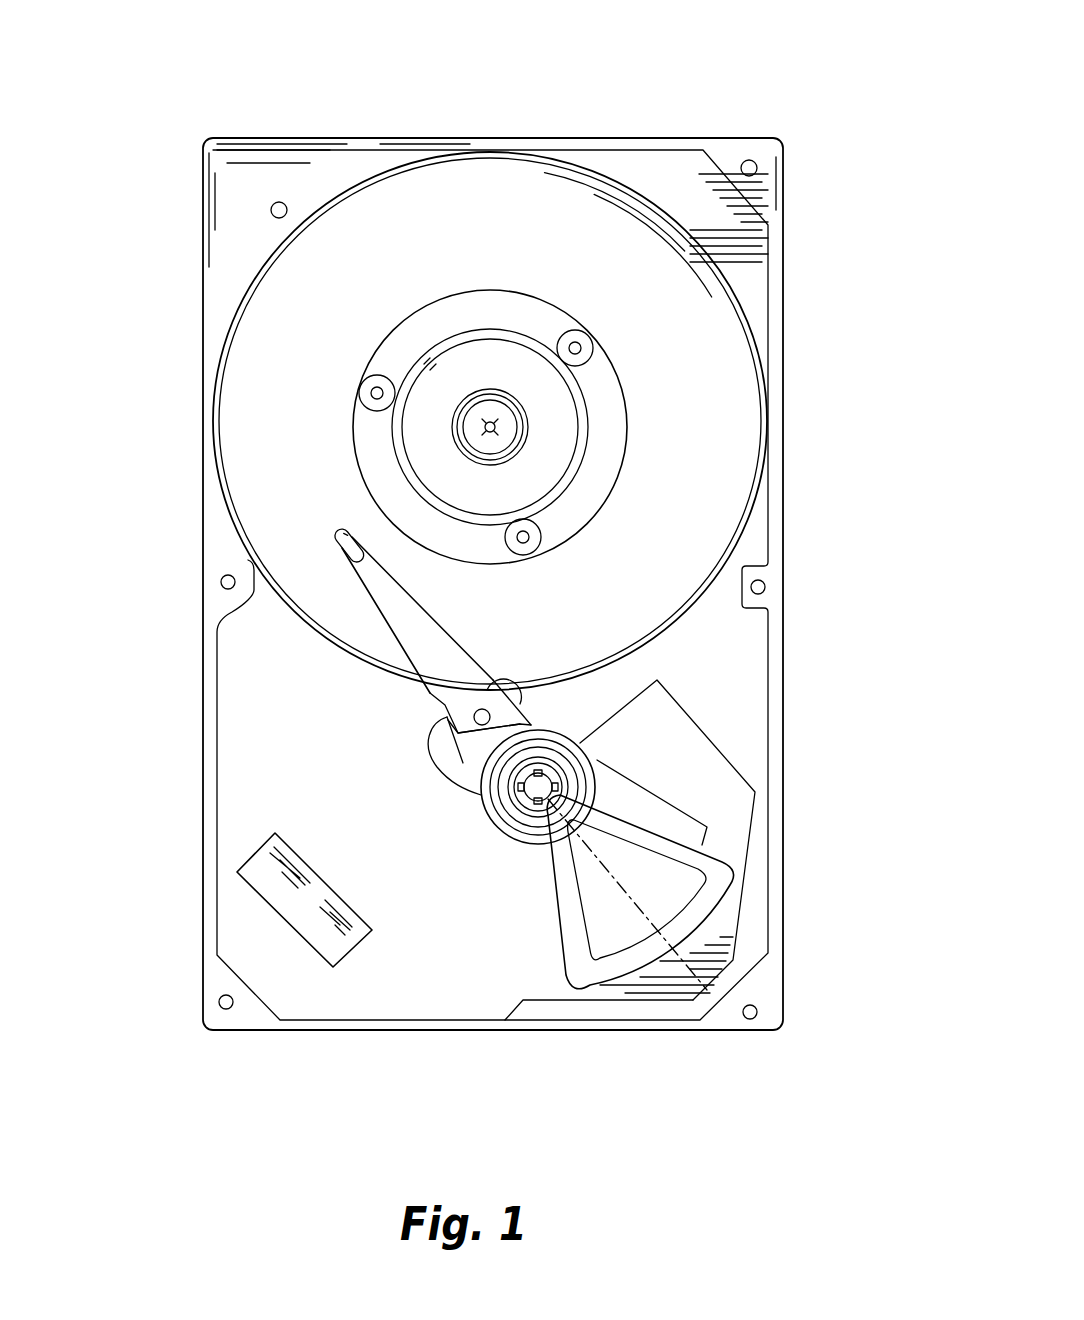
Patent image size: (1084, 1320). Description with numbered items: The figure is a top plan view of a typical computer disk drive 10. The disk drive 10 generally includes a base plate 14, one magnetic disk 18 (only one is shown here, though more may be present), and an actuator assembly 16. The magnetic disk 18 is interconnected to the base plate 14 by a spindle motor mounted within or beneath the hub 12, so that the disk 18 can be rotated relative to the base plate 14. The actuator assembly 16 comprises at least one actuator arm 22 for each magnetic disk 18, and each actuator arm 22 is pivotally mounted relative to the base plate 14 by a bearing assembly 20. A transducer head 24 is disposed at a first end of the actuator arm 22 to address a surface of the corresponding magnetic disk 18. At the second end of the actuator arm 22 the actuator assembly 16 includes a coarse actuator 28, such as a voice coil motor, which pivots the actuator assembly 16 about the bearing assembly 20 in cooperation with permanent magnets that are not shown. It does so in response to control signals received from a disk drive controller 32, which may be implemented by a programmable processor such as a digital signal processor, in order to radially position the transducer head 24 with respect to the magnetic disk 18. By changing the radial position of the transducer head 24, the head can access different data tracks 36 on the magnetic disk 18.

The disk drive 10 is at (513, 110).
The hub 12 is at (477, 437).
The base plate 14 is at (752, 670).
The actuator assembly 16 is at (375, 605).
The magnetic disk 18 is at (738, 395).
The bearing assembly 20 is at (538, 787).
The actuator arm 22 is at (410, 633).
The transducer head 24 is at (330, 546).
The coarse actuator 28 is at (595, 973).
The disk drive controller 32 is at (290, 910).
The data tracks 36 is at (748, 487).